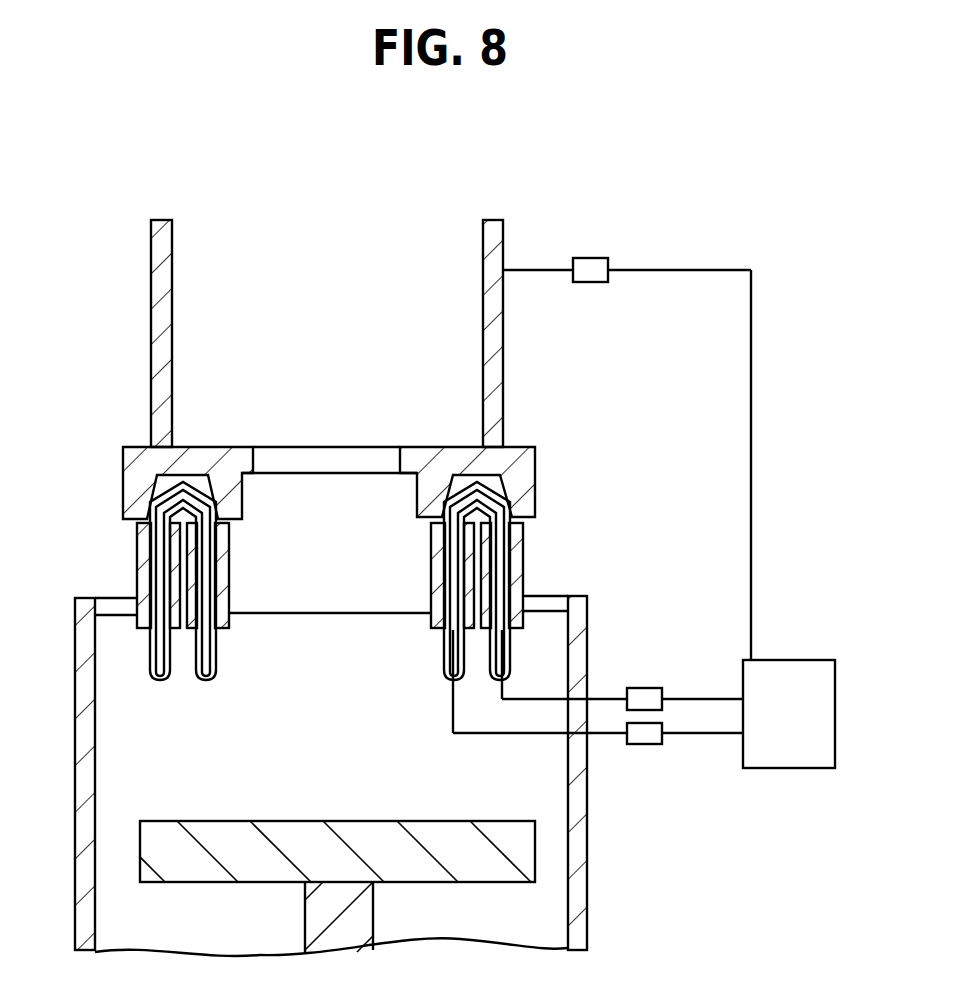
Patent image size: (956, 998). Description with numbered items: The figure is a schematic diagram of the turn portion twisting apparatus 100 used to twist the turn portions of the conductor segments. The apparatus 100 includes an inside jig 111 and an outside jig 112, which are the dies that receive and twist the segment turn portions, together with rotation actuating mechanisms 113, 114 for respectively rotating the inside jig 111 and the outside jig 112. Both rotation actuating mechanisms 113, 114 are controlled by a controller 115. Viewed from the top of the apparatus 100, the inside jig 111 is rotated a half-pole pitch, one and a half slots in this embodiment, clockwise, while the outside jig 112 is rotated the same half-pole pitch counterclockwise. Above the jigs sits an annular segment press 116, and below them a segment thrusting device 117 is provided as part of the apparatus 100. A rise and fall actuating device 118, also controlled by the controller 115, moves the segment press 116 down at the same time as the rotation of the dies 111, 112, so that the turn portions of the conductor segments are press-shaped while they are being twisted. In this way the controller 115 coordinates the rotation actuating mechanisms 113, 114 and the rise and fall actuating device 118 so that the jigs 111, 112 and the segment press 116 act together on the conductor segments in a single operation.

The turn portion twisting apparatus 100 is at (572, 402).
The inside jig 111 is at (224, 622).
The outside jig 112 is at (517, 558).
The rotation actuating mechanism 113 is at (642, 694).
The rotation actuating mechanism 114 is at (645, 740).
The controller 115 is at (795, 660).
The annular segment press 116 is at (530, 460).
The segment thrusting device 117 is at (527, 849).
The rise and fall actuating device 118 is at (590, 258).